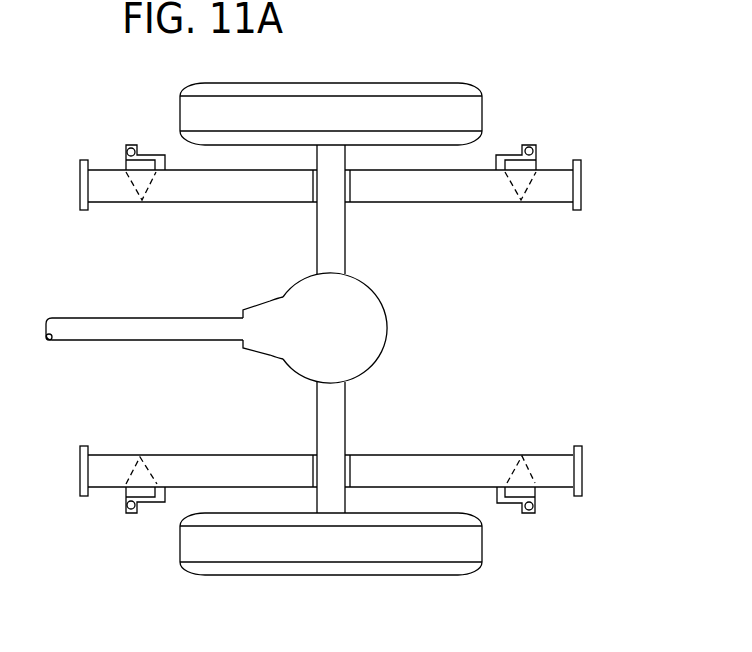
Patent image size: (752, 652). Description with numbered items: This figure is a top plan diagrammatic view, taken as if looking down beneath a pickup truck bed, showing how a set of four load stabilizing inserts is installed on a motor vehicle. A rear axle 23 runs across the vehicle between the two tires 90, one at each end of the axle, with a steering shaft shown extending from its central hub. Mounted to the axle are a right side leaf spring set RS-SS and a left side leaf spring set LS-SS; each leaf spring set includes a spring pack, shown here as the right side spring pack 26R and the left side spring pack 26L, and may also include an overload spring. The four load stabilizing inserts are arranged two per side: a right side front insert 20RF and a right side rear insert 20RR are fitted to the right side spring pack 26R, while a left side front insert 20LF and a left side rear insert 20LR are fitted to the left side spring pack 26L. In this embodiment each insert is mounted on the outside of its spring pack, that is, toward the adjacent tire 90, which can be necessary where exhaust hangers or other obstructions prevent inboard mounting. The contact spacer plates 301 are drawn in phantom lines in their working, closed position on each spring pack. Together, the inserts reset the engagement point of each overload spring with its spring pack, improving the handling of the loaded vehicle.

The tire 90 is at (392, 90).
The rear axle 23 is at (317, 233).
The right side spring pack 26R is at (407, 192).
The left side spring pack 26L is at (408, 465).
The right side front insert 20RF is at (156, 155).
The right side rear insert 20RR is at (503, 155).
The left side front insert 20LF is at (157, 502).
The left side rear insert 20LR is at (505, 503).
The tie member (dashed) 301 is at (563, 423).
The right side leaf spring set RS-SS is at (582, 188).
The left side leaf spring set LS-SS is at (582, 471).